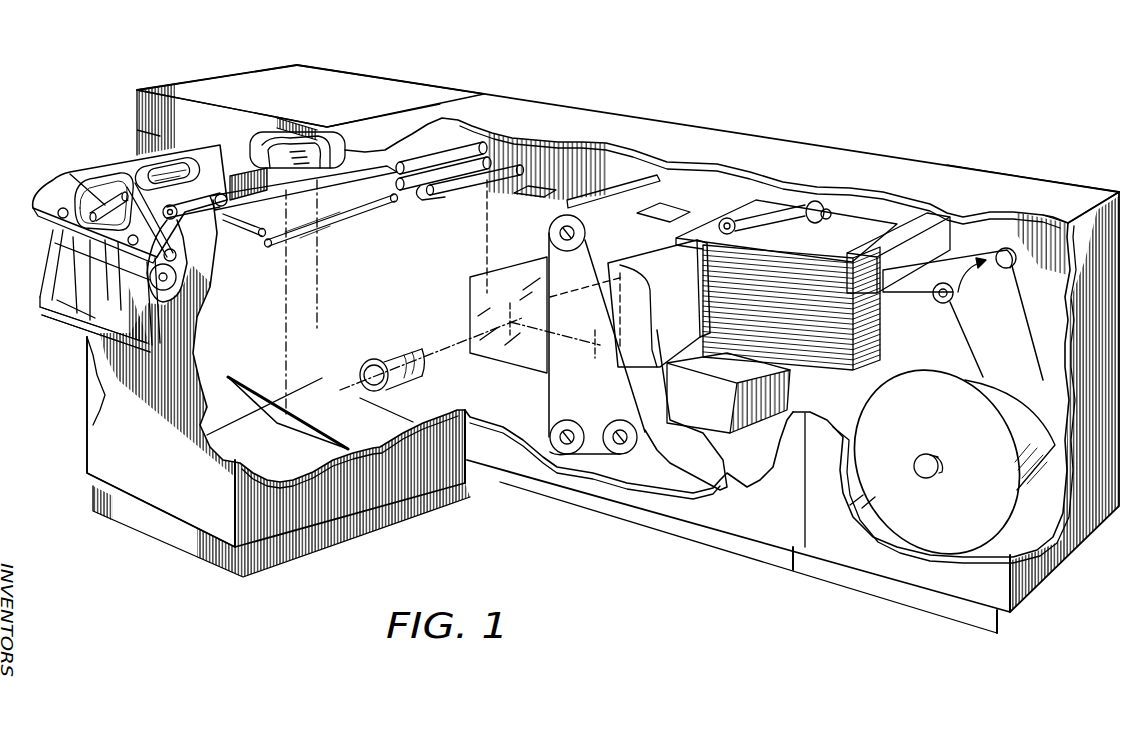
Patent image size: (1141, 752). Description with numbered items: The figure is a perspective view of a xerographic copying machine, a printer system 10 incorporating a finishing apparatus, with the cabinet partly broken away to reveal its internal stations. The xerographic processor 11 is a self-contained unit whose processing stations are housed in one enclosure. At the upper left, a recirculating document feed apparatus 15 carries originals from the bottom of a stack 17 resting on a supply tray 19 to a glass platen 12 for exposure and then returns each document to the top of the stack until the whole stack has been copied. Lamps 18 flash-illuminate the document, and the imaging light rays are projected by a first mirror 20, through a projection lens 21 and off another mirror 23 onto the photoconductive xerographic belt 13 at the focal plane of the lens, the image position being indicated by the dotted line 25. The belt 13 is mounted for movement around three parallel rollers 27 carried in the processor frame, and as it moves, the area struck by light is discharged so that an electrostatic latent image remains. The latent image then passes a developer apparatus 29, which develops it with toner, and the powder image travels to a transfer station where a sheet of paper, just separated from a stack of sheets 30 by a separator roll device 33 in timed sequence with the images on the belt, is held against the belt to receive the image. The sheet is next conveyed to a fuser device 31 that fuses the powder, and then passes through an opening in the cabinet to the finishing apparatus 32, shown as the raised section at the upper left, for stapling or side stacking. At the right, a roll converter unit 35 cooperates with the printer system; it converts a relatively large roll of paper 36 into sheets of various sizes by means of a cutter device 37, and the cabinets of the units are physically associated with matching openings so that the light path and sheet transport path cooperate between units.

The printer system 10 is at (736, 42).
The xerographic processor 11 is at (783, 134).
The glass platen 12 is at (250, 162).
The xerographic belt 13 is at (660, 208).
The recirculating document feed apparatus 15 is at (99, 156).
The stack 17 is at (80, 310).
The lamps 18 is at (250, 217).
The supply tray 19 is at (92, 390).
The first mirror 20 is at (303, 433).
The projection lens 21 is at (380, 356).
The mirror 23 is at (491, 357).
The dotted line 25 is at (552, 392).
The rollers 27 is at (552, 221).
The developer apparatus 29 is at (720, 485).
The stack of sheets 30 is at (703, 297).
The fuser device 31 is at (463, 140).
The finishing apparatus 32 is at (378, 78).
The separator roll device 33 is at (783, 210).
The roll converter unit 35 is at (1066, 184).
The roll of paper 36 is at (885, 514).
The cutter device 37 is at (953, 234).